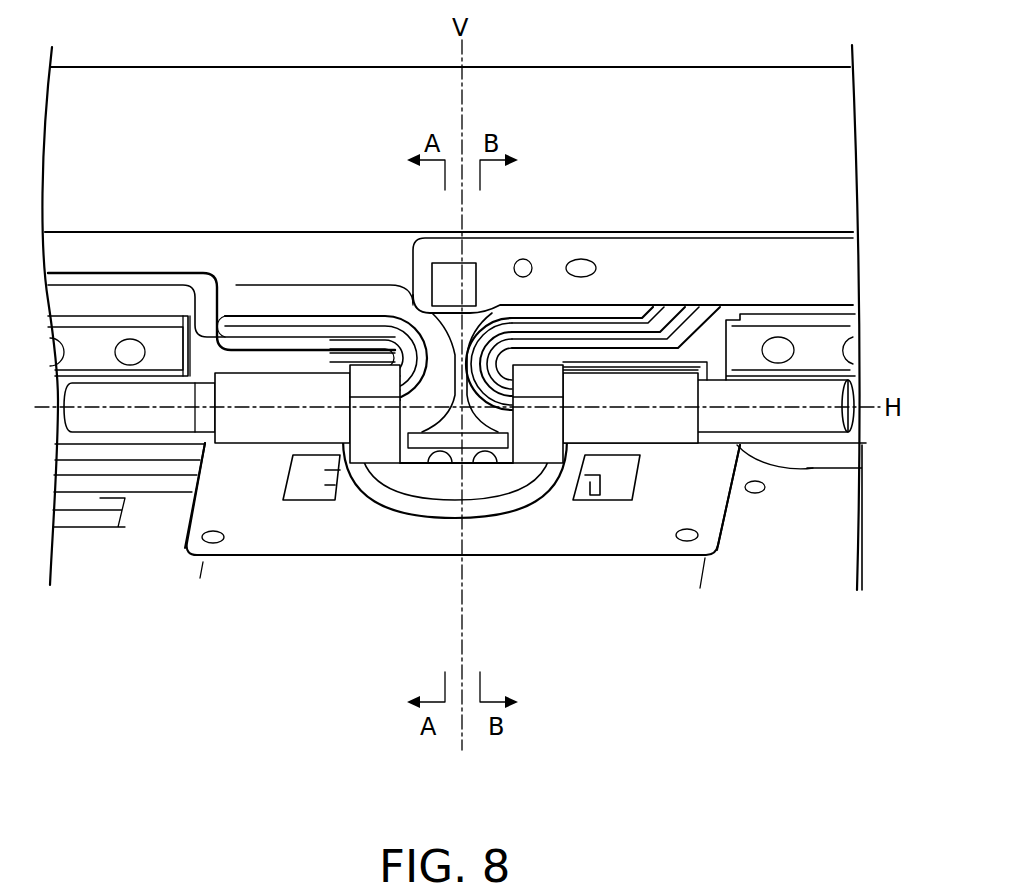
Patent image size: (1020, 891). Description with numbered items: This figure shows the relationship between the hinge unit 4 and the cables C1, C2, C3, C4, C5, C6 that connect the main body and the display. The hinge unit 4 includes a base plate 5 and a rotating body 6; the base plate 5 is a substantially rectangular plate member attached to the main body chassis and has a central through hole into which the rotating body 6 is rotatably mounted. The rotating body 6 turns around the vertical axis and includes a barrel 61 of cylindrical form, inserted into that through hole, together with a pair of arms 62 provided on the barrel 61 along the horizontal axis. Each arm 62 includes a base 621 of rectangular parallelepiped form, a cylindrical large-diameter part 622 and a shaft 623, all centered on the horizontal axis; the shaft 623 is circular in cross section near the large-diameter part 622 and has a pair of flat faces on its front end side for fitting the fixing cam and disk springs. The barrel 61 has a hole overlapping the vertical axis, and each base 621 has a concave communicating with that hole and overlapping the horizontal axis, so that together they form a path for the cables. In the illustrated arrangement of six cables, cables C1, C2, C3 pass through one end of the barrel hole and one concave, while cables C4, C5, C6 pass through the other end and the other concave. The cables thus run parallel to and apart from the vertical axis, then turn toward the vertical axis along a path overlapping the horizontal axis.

The hinge unit 4 is at (415, 563).
The base plate 5 is at (522, 538).
The rotating body 6 is at (440, 524).
The barrel 61 is at (498, 505).
The arm 62 is at (392, 617).
The base 621 is at (375, 440).
The large-diameter part 622 is at (258, 430).
The shaft 623 is at (165, 420).
The cable C1 is at (540, 313).
The cable C2 is at (583, 330).
The cable C3 is at (680, 305).
The cable C4 is at (338, 300).
The cable C5 is at (302, 338).
The cable C6 is at (258, 345).